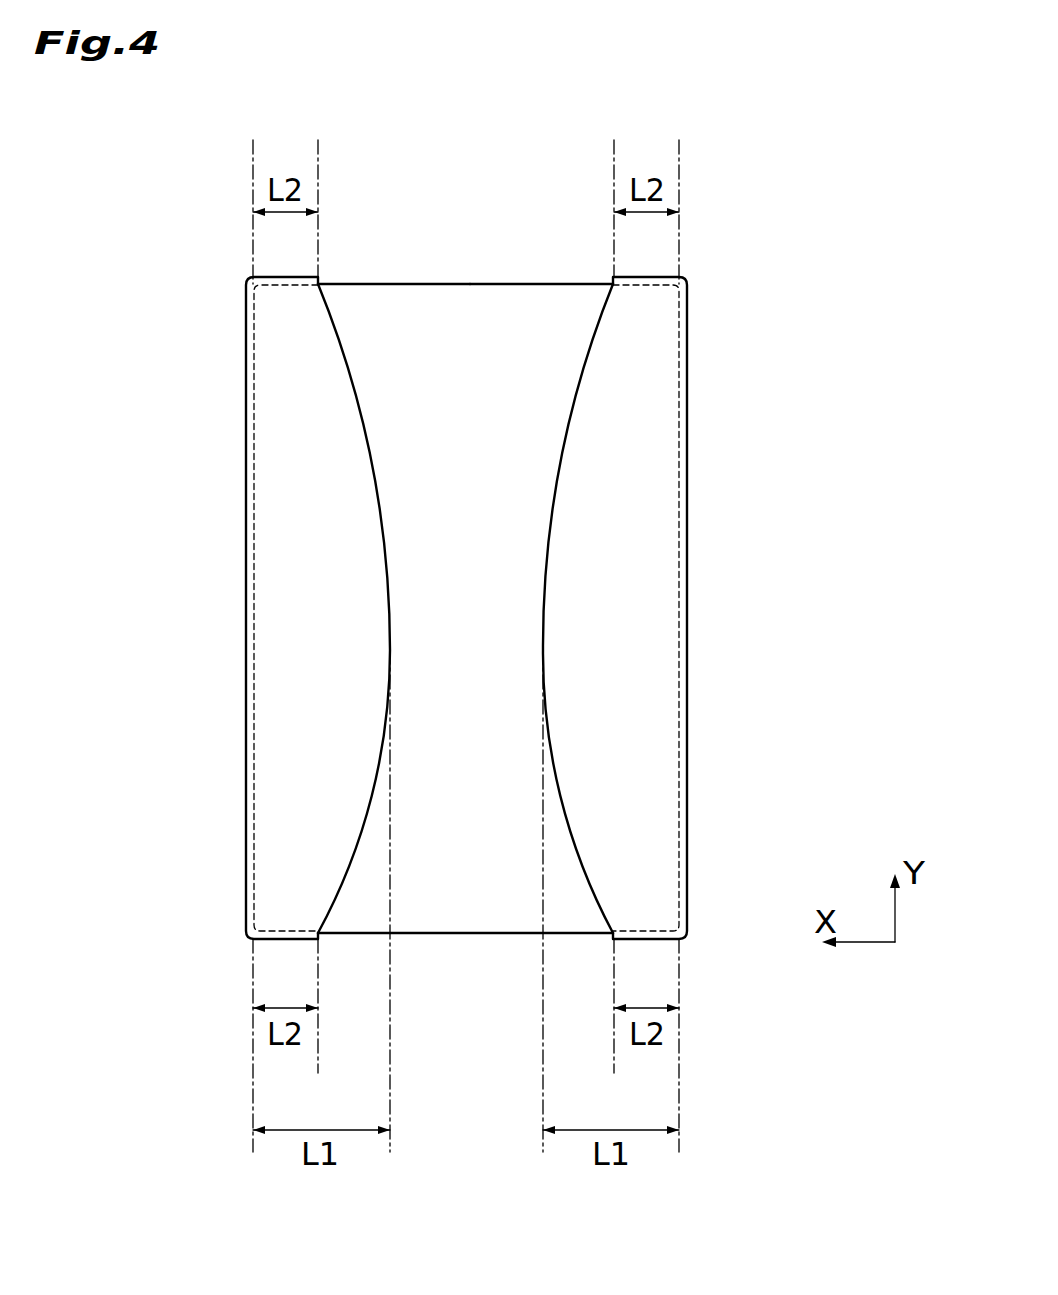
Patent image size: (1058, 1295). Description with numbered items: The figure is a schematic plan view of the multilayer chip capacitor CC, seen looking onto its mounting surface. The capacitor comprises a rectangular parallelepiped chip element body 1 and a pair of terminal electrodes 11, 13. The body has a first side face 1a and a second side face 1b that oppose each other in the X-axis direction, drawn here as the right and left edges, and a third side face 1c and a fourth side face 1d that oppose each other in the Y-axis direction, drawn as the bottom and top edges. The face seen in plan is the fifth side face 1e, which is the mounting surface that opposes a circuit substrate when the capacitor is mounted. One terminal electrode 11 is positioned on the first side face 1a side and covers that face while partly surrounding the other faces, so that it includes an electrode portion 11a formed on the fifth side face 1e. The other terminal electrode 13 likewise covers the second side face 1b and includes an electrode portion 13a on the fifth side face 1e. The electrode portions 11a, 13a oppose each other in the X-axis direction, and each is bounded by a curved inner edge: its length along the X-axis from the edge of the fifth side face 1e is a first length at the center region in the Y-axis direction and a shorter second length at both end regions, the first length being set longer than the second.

The chip element body 1 is at (464, 607).
The first side face 1a is at (679, 514).
The second side face 1b is at (253, 514).
The third side face 1c is at (442, 939).
The fourth side face 1d is at (433, 284).
The fifth side face 1e is at (540, 310).
The terminal electrode 11 is at (688, 760).
The electrode portion 11a is at (638, 413).
The terminal electrode 13 is at (246, 760).
The electrode portion 13a is at (298, 413).
The multilayer chip capacitor CC is at (790, 330).